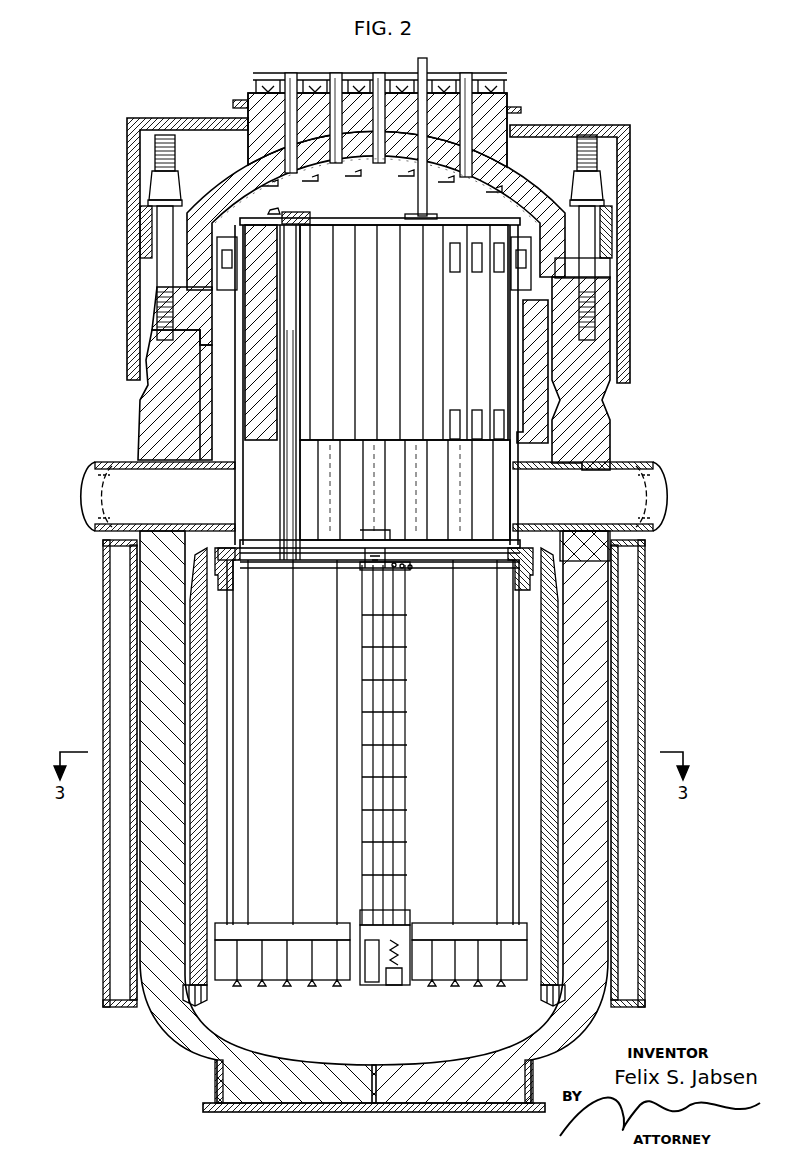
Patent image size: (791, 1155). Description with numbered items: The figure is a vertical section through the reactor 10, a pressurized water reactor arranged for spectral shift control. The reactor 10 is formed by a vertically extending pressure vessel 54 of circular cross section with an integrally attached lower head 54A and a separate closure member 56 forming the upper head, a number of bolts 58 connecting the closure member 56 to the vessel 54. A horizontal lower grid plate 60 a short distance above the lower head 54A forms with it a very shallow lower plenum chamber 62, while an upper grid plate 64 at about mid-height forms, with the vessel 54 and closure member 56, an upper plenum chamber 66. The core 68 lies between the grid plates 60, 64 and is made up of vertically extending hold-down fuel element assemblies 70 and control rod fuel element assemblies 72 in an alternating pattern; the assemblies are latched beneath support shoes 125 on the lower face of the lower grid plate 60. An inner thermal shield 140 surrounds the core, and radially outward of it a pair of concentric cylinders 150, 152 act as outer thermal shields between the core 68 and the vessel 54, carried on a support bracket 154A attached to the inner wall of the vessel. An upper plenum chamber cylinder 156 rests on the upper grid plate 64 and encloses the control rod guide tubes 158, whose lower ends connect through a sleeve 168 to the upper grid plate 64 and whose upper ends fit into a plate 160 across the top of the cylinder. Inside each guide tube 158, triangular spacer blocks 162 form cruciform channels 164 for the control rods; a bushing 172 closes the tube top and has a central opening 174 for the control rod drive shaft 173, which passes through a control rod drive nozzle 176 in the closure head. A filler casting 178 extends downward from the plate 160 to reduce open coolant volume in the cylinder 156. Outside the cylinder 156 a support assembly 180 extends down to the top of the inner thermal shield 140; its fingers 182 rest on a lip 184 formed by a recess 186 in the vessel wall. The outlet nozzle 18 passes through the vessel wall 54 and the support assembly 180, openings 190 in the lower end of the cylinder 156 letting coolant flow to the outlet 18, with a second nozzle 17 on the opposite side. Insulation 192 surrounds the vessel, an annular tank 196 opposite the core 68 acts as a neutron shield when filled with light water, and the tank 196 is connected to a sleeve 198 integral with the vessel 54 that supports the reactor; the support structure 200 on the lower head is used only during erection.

The reactor 10 is at (648, 617).
The outlet nozzle 17 is at (645, 510).
The outlet nozzle 18 is at (96, 474).
The pressure vessel 54 is at (600, 443).
The lower head 54A is at (560, 1018).
The closure member 56 is at (520, 165).
The bolts 58 is at (596, 148).
The lower grid plate 60 is at (253, 973).
The lower plenum chamber 62 is at (346, 1033).
The upper grid plate 64 is at (500, 537).
The upper plenum chamber 66 is at (364, 196).
The core 68 is at (301, 734).
The hold-down fuel element assemblies 70 is at (407, 717).
The control rod fuel element assemblies 72 is at (360, 767).
The support shoes 125 is at (443, 983).
The inner thermal shield 140 is at (230, 705).
The outer thermal shield 150 is at (207, 837).
The outer thermal shield 152 is at (188, 873).
The thermal shield support 154A is at (208, 997).
The upper plenum chamber cylinder 156 is at (237, 415).
The control rod guide tubes 158 is at (323, 490).
The plate 160 is at (247, 213).
The triangular shaped spacer blocks 162 is at (284, 516).
The cruciform shaped channels 164 is at (288, 462).
The sleeve 168 is at (374, 569).
The bushing 172 is at (300, 215).
The control rod drive shaft 173 is at (428, 199).
The central opening 174 is at (284, 210).
The control rod drive nozzles 176 is at (283, 117).
The filler casting 178 is at (210, 342).
The support assembly 180 is at (543, 403).
The fingers 182 is at (175, 273).
The lip 184 is at (157, 313).
The recess 186 is at (567, 283).
The openings 190 is at (236, 478).
The insulation 192 is at (125, 157).
The annular shaped tank 196 is at (104, 870).
The sleeve 198 is at (138, 680).
The support structure 200 is at (215, 1077).